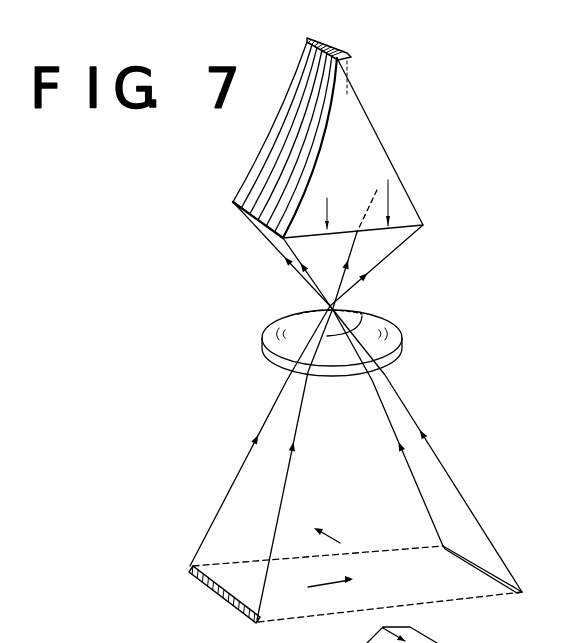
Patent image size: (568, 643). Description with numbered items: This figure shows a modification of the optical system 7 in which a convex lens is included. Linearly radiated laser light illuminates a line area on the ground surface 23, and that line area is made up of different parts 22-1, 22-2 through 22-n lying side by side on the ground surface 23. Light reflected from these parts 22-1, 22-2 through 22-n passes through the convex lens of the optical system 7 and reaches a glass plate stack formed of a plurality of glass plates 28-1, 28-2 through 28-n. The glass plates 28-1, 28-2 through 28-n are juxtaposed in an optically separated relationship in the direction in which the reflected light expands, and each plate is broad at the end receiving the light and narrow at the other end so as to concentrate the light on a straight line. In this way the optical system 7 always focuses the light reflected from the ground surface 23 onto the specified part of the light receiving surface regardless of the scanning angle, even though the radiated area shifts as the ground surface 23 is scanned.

The optical system 7 is at (434, 237).
The glass plate 28-n is at (307, 39).
The glass plate 28-2 is at (348, 54).
The glass plate 28-1 is at (349, 55).
The ground surface 23 is at (393, 556).
The part of radiated line area 22-1 is at (189, 566).
The part of radiated line area 22-2 is at (201, 575).
The part of radiated line area 22-n is at (256, 622).